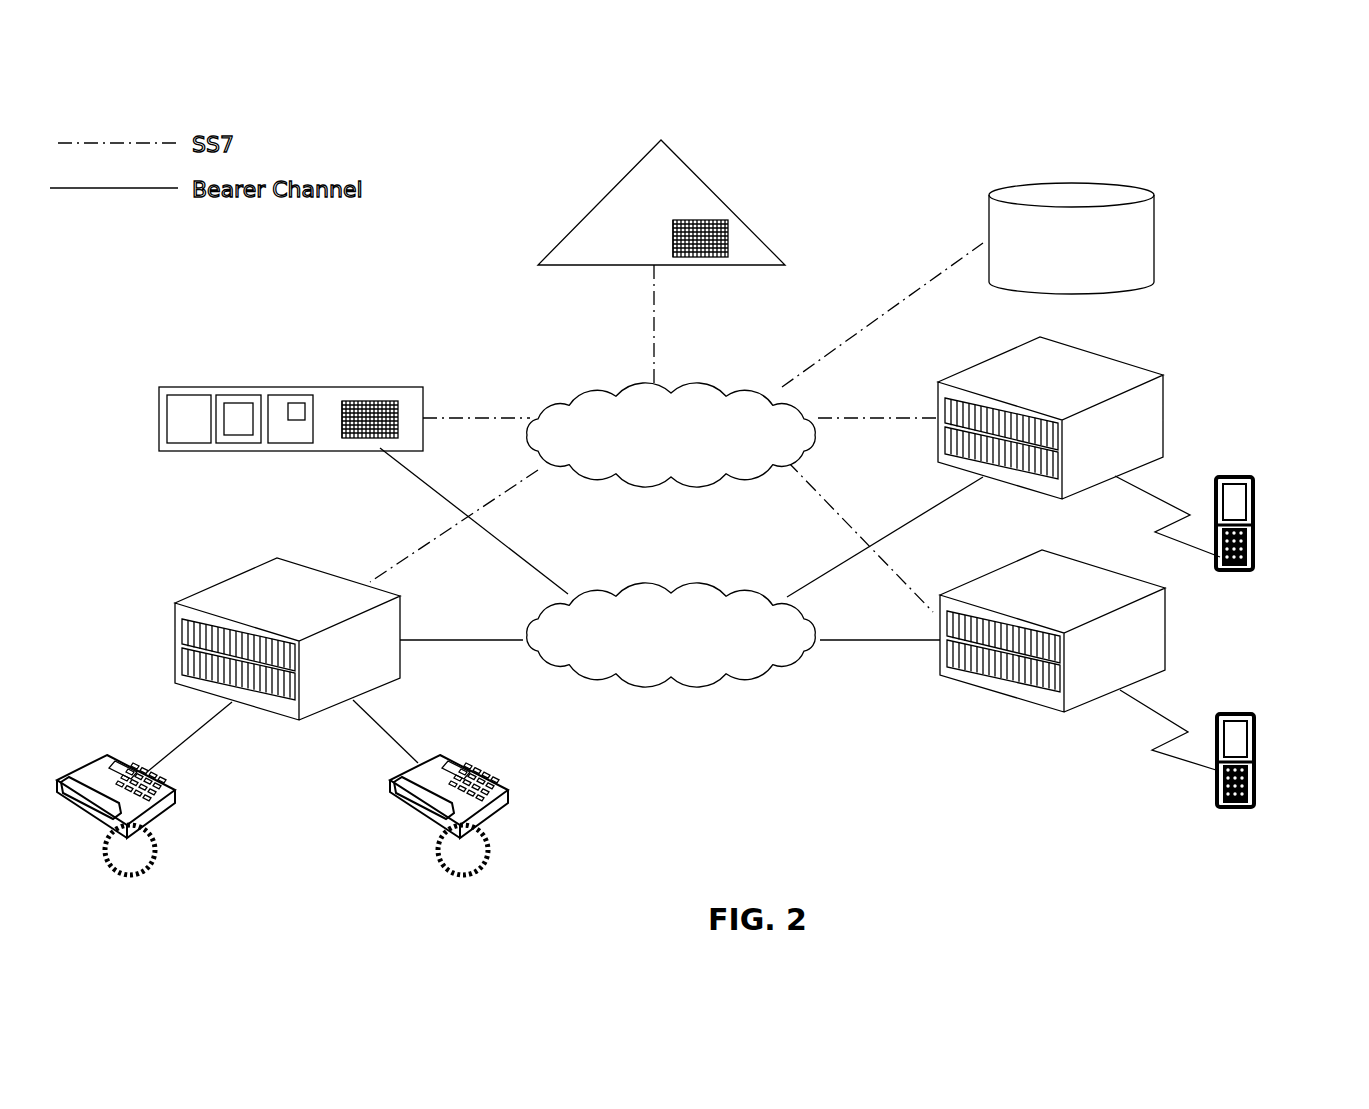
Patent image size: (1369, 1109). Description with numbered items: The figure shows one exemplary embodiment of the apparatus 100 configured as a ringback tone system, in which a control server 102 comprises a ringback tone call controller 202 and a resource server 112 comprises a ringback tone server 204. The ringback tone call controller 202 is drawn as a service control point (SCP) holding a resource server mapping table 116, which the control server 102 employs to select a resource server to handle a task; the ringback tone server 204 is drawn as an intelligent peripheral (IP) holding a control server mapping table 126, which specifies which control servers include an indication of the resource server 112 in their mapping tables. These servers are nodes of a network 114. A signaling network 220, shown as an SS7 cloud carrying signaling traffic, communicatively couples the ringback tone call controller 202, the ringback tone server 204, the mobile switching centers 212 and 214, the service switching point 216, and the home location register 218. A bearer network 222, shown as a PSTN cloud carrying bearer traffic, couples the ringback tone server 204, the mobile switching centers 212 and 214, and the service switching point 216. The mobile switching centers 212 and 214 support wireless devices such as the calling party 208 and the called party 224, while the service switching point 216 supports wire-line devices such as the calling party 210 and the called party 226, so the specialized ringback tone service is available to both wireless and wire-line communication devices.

The apparatus 100 is at (432, 126).
The control server 102 is at (661, 217).
The ringback tone call controller 202 is at (590, 208).
The resource server mapping table 116 is at (705, 258).
The resource server 112 is at (291, 405).
The ringback tone server 204 is at (340, 386).
The control server mapping table 126 is at (357, 440).
The network 114 is at (429, 290).
The signaling network 220 is at (565, 390).
The bearer network 222 is at (698, 688).
The home location register 218 is at (1156, 240).
The mobile switching center 212 is at (1167, 405).
The mobile switching center 214 is at (1003, 700).
The service switching point 216 is at (205, 590).
The calling party 210 is at (170, 807).
The called party 226 is at (420, 813).
The calling party 208 is at (1255, 522).
The called party 224 is at (1255, 765).